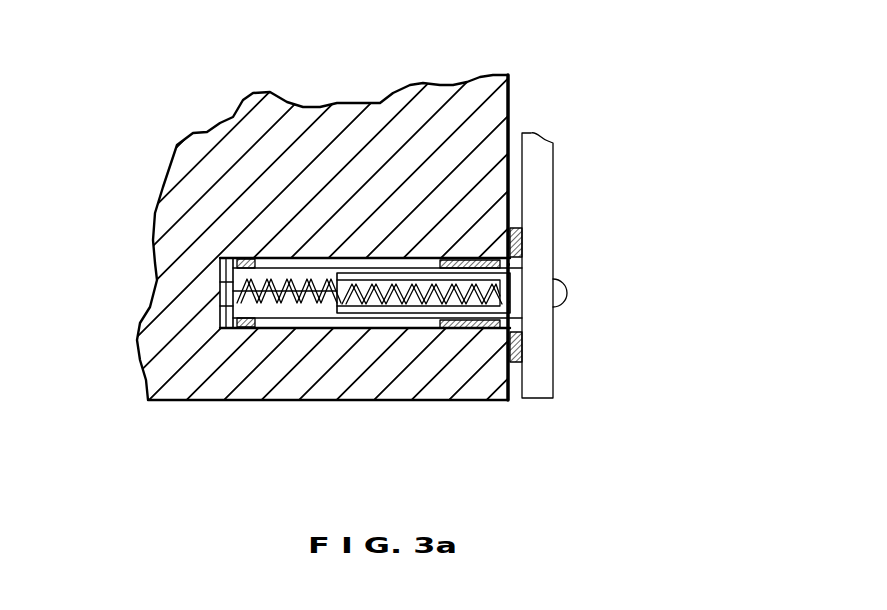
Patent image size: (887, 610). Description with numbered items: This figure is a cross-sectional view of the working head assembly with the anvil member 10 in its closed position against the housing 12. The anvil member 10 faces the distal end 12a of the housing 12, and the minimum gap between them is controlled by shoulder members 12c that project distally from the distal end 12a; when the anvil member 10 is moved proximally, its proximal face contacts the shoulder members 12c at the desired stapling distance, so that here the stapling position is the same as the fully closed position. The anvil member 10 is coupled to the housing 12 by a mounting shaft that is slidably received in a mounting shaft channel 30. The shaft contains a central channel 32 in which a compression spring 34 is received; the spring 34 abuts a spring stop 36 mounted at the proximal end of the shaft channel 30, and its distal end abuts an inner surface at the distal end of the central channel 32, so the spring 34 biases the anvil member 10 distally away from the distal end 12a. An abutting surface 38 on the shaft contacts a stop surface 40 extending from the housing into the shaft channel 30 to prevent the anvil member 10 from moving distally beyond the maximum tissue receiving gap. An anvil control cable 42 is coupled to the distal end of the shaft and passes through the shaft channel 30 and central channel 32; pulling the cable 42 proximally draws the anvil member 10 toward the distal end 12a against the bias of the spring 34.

The anvil member 10 is at (537, 393).
The housing 12 is at (340, 140).
The distal end 12a is at (508, 76).
The shoulder members 12c is at (524, 233).
The mounting shaft channel 30 is at (305, 322).
The central channel 32 is at (512, 282).
The compression spring 34 is at (362, 313).
The spring stop 36 is at (220, 268).
The abutting surface 38 is at (242, 258).
The stop surface 40 is at (462, 258).
The anvil control cable 42 is at (298, 258).